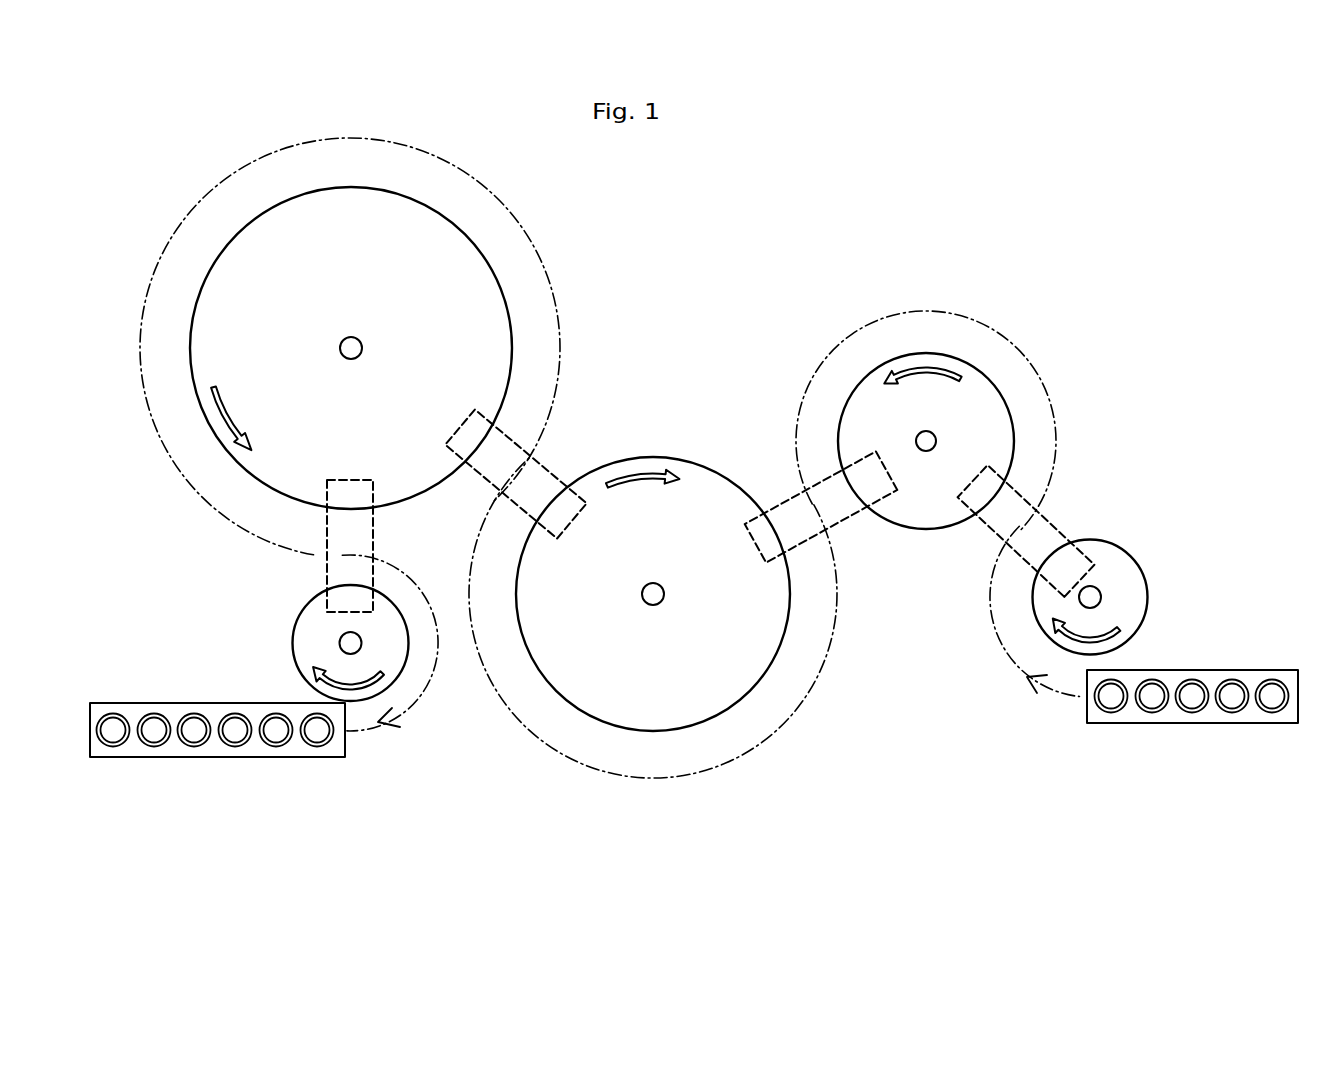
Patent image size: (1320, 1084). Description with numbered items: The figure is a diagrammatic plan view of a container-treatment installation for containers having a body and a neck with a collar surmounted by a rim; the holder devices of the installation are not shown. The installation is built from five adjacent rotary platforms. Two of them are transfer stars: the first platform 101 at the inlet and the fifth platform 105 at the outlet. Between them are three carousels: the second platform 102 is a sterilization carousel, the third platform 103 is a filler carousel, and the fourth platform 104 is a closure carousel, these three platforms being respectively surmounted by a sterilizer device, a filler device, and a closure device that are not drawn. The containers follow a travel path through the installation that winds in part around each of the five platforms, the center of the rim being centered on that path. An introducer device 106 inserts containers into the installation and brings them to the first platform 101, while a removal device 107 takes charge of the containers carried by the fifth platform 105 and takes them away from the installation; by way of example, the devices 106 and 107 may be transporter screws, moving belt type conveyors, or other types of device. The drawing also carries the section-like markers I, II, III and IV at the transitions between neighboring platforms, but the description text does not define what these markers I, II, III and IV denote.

The first platform 101 is at (1117, 550).
The second platform 102 is at (977, 375).
The third platform 103 is at (673, 460).
The fourth platform 104 is at (469, 245).
The fifth platform 105 is at (298, 642).
The introducer device 106 is at (1170, 717).
The device for removing containers 107 is at (173, 752).
The first station I is at (1050, 530).
The second station II is at (785, 510).
The third station III is at (543, 470).
The fourth station IV is at (328, 563).